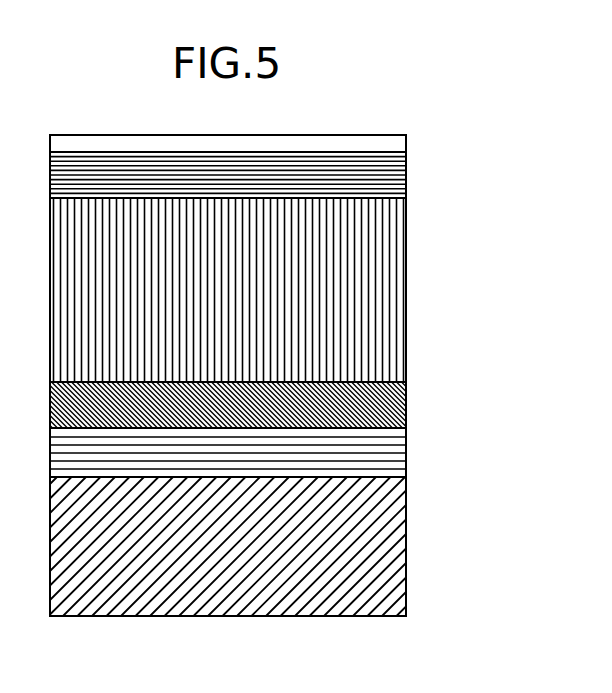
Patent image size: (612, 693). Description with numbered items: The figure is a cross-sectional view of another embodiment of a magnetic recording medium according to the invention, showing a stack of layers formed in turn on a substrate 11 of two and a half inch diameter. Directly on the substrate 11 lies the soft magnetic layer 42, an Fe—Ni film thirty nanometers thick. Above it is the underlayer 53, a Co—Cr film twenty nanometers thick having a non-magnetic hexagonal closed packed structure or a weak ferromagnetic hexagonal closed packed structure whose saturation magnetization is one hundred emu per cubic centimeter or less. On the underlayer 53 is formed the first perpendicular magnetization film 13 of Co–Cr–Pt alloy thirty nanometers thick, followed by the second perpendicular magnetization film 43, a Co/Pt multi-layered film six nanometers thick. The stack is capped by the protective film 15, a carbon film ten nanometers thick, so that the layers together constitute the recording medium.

The substrate 11 is at (397, 533).
The soft magnetic layer 42 is at (397, 453).
The underlayer 53 is at (398, 402).
The first perpendicular magnetization film 13 is at (398, 272).
The second perpendicular magnetization film 43 is at (398, 171).
The protective film 15 is at (398, 143).